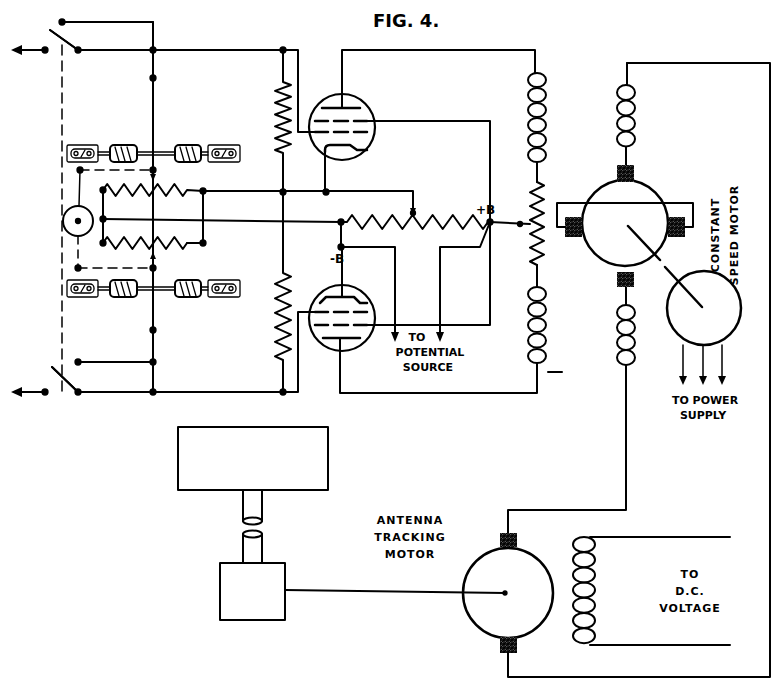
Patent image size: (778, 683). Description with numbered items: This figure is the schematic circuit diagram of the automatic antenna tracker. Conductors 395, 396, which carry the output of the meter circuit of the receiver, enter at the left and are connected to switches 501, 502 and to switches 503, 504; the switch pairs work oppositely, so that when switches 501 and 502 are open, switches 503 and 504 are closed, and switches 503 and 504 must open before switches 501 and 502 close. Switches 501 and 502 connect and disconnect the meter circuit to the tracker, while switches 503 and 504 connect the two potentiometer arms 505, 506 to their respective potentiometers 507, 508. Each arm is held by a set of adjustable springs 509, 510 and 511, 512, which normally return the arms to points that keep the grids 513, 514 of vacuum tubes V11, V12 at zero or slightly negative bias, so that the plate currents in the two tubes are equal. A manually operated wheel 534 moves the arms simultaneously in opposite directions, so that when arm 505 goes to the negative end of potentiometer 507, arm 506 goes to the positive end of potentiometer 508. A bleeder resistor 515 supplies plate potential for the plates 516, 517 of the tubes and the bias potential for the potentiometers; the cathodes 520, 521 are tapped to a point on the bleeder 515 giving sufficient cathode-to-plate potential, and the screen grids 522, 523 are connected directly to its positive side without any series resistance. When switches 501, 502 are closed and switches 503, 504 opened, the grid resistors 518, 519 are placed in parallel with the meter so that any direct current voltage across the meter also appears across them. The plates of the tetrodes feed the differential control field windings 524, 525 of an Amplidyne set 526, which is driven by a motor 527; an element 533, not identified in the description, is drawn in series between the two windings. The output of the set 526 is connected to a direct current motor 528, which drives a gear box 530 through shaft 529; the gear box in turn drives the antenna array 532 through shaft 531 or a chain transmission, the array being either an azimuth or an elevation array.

The conductor 395 is at (27, 50).
The conductor 396 is at (27, 392).
The switch 501 is at (48, 55).
The switch 502 is at (48, 395).
The switch 503 is at (64, 20).
The switch 504 is at (82, 360).
The potentiometer arm 505 is at (158, 173).
The potentiometer arm 506 is at (158, 265).
The potentiometer 507 is at (190, 188).
The potentiometer 508 is at (188, 252).
The adjustable spring 509 is at (120, 143).
The adjustable spring 510 is at (190, 143).
The adjustable spring 511 is at (120, 299).
The adjustable spring 512 is at (190, 299).
The grid of vacuum tube V11 513 is at (372, 134).
The grid of vacuum tube V12 514 is at (353, 311).
The bleeder resistor 515 is at (458, 218).
The plate of tube V11 516 is at (360, 108).
The plate of tube V12 517 is at (348, 340).
The grid resistor 518 is at (274, 105).
The grid resistor 519 is at (275, 338).
The cathode of tube V11 520 is at (366, 150).
The cathode of tube V12 521 is at (337, 297).
The screen grid of tube V11 522 is at (364, 120).
The screen grid of tube V12 523 is at (321, 328).
The differential control field winding 524 is at (547, 103).
The differential control field winding 525 is at (545, 318).
The Amplidyne set 526 is at (647, 187).
The motor 527 is at (672, 330).
The direct current motor 528 is at (472, 626).
The shaft 529 is at (322, 591).
The gear box 530 is at (220, 593).
The shaft 531 is at (242, 540).
The antenna array 532 is at (227, 492).
The resistor 533 is at (521, 223).
The manually operated wheel 534 is at (63, 228).
The vacuum tube V11 is at (347, 90).
The vacuum tube V12 is at (342, 334).